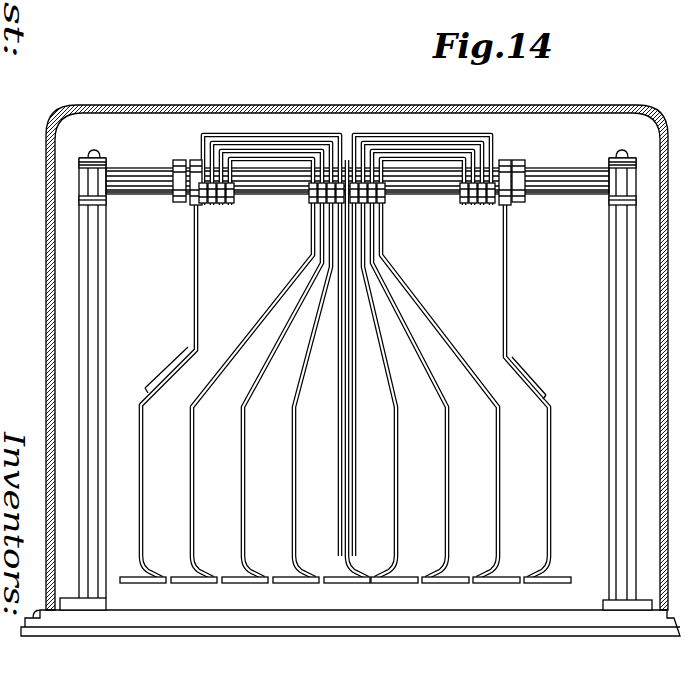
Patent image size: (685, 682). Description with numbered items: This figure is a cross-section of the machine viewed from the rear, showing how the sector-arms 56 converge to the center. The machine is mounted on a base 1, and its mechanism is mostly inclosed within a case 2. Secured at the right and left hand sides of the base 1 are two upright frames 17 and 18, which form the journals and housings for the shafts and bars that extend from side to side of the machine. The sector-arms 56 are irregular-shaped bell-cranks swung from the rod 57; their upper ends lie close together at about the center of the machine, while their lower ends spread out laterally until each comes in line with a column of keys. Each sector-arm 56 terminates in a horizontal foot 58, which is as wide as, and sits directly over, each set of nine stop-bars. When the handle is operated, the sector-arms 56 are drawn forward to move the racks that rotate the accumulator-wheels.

The base 1 is at (555, 611).
The case 2 is at (123, 114).
The right upright frame 17 is at (607, 372).
The left upright frame 18 is at (105, 336).
The sector-arm 56 is at (343, 383).
The rod 57 is at (133, 195).
The horizontal foot 58 is at (135, 586).